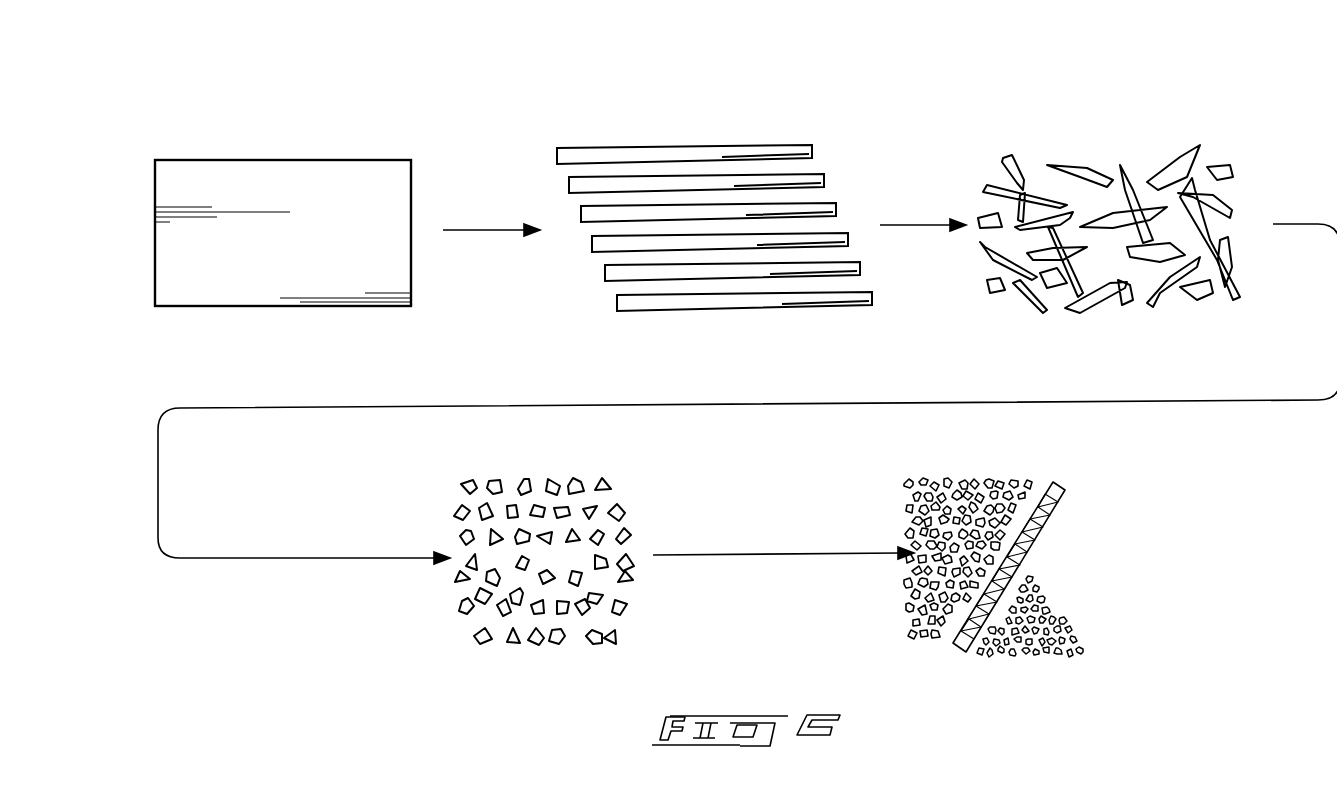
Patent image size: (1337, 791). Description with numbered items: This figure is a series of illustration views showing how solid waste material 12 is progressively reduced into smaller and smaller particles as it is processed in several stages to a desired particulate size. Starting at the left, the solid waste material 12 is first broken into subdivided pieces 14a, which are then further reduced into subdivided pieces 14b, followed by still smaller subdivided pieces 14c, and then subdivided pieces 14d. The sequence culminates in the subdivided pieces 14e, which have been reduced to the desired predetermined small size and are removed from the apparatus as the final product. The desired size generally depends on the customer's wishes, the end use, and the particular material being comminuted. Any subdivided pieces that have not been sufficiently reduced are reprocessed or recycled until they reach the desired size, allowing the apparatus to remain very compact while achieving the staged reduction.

The solid waste material 12 is at (223, 274).
The subdivided pieces 14a is at (633, 148).
The subdivided pieces 14b is at (1080, 172).
The subdivided pieces 14c is at (607, 487).
The subdivided pieces 14d is at (958, 480).
The subdivided pieces of desired small size 14e is at (1060, 606).